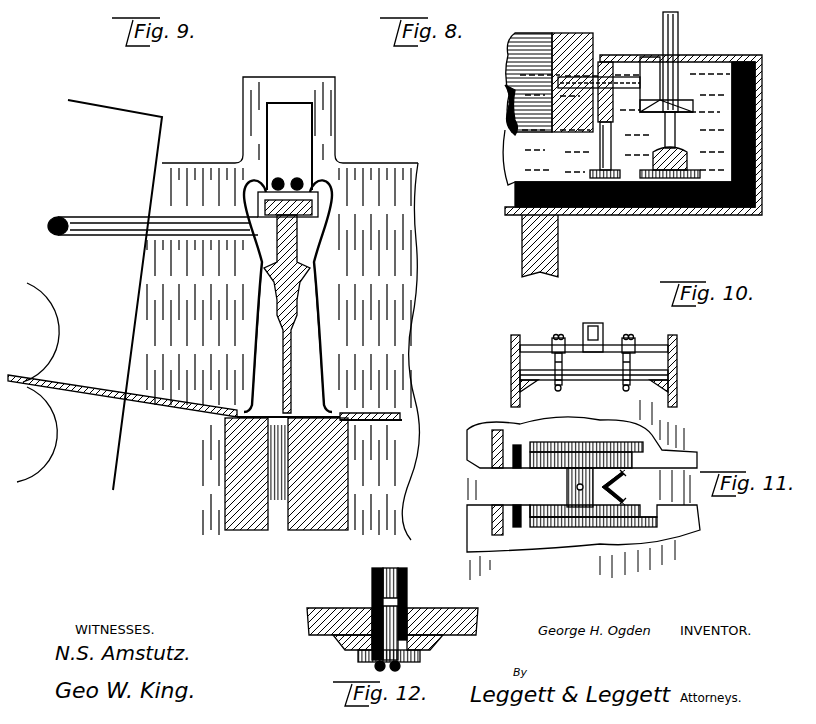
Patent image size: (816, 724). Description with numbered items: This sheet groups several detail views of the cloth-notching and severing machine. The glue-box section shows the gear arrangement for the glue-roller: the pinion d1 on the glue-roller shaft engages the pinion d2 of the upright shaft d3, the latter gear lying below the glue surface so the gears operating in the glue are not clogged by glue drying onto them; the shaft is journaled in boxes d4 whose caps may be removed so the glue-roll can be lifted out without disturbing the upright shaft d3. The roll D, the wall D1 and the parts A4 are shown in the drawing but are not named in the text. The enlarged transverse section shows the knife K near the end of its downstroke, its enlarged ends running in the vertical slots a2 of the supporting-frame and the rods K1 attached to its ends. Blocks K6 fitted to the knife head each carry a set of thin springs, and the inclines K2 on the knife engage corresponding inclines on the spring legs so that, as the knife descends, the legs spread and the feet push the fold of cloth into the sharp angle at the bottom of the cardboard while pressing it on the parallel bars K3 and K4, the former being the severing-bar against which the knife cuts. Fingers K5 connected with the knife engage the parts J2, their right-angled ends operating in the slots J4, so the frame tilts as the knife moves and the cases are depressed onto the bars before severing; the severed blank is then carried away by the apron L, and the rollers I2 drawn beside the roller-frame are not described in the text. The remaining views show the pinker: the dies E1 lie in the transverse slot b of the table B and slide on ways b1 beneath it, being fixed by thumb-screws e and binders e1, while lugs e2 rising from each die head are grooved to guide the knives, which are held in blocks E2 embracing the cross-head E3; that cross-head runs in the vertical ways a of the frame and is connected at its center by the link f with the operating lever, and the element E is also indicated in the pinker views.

In FIG. 9, the tilting-frame parts J2 is at (115, 295).
In FIG. 9, the slots J4 is at (49, 242).
In FIG. 9, the rollers I2 is at (52, 297).
In FIG. 9, the vertical slots a2 is at (316, 124).
In FIG. 9, the knife K is at (245, 213).
In FIG. 9, the rods K1 is at (263, 265).
In FIG. 9, the inclines K2 is at (274, 282).
In FIG. 9, the severing-bar K3 is at (310, 524).
In FIG. 9, the metal bar K4 is at (248, 525).
In FIG. 9, the fingers K5 is at (153, 217).
In FIG. 9, the blocks K6 is at (314, 198).
In FIG. 9, the apron L is at (205, 407).
In FIG. 8, the support block D is at (573, 33).
In FIG. 8, the tank wall D1 is at (532, 150).
In FIG. 8, the vertical ways a is at (622, 77).
In FIG. 10, the vertical ways a is at (523, 345).
In FIG. 8, the pinion d1 is at (644, 57).
In FIG. 8, the pinion d2 is at (680, 103).
In FIG. 8, the upright shaft d3 is at (678, 44).
In FIG. 8, the boxes d4 is at (612, 145).
In FIG. 10, the side walls A4 is at (511, 362).
In FIG. 10, the table B is at (594, 375).
In FIG. 11, the table B is at (692, 452).
In FIG. 12, the table B is at (447, 609).
In FIG. 10, the screw / bracket E is at (555, 360).
In FIG. 11, the screw / bracket E is at (624, 487).
In FIG. 12, the screw / bracket E is at (393, 569).
In FIG. 10, the dies E1 is at (562, 377).
In FIG. 11, the dies E1 is at (602, 498).
In FIG. 10, the blocks E2 is at (558, 340).
In FIG. 10, the cross-head E3 is at (537, 348).
In FIG. 10, the link f is at (600, 345).
In FIG. 10, the thumb-screws e is at (594, 393).
In FIG. 11, the thumb-screws e is at (576, 487).
In FIG. 12, the thumb-screws e is at (400, 667).
In FIG. 11, the binders e1 is at (585, 497).
In FIG. 12, the binders e1 is at (386, 662).
In FIG. 10, the lugs e2 is at (555, 368).
In FIG. 11, the lugs e2 is at (630, 476).
In FIG. 12, the lugs e2 is at (372, 585).
In FIG. 10, the transverse slot b is at (588, 380).
In FIG. 11, the transverse slot b is at (489, 482).
In FIG. 12, the transverse slot b is at (370, 613).
In FIG. 11, the ways b1 is at (516, 469).
In FIG. 12, the ways b1 is at (438, 655).